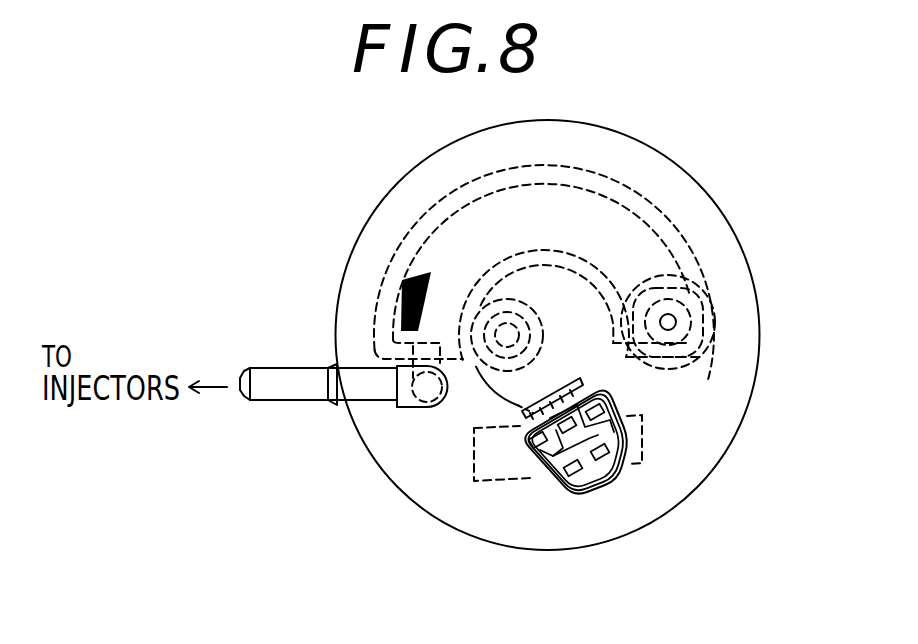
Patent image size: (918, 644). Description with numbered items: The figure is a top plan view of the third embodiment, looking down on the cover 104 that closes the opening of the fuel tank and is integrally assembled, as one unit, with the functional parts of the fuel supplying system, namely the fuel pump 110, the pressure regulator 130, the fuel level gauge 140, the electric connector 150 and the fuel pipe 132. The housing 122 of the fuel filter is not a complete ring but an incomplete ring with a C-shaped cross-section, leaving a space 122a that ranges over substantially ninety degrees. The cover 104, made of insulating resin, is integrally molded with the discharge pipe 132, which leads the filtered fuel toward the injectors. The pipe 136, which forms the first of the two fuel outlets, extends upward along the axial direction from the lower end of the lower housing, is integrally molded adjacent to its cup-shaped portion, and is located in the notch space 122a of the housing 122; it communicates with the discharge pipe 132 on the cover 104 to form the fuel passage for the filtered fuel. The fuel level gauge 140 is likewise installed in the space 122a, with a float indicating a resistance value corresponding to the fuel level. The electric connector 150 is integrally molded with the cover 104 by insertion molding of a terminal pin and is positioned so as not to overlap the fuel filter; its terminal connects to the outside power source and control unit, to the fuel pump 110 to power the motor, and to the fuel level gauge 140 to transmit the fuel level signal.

The cover 104 is at (661, 174).
The housing 122 is at (673, 234).
The space 122a is at (668, 393).
The pressure regulator 130 is at (689, 366).
The fuel pump 110 is at (598, 370).
The electric connector 150 is at (572, 494).
The fuel level gauge 140 is at (494, 468).
The pipe 136 is at (420, 427).
The discharge pipe 132 is at (281, 392).